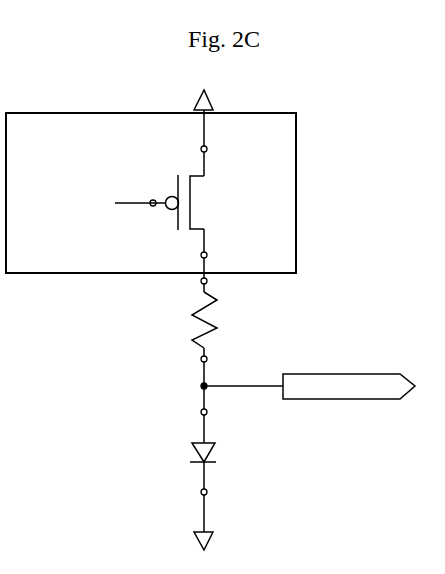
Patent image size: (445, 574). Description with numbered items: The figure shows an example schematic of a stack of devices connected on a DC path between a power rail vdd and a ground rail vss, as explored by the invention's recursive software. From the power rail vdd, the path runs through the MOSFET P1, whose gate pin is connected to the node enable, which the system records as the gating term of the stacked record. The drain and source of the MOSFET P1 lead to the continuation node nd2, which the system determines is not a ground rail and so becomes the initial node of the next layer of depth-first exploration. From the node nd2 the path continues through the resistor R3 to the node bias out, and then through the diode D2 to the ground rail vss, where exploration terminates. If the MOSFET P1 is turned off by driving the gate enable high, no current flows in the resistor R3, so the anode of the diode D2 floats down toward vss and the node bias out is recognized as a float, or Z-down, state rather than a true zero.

The power rail vdd is at (224, 121).
The MOSFET P1 is at (214, 205).
The gate node enable is at (96, 202).
The continuation node nd2 is at (234, 273).
The resistor R3 is at (224, 323).
The bias out node bias out is at (308, 385).
The diode D2 is at (221, 452).
The ground rail vss is at (220, 522).